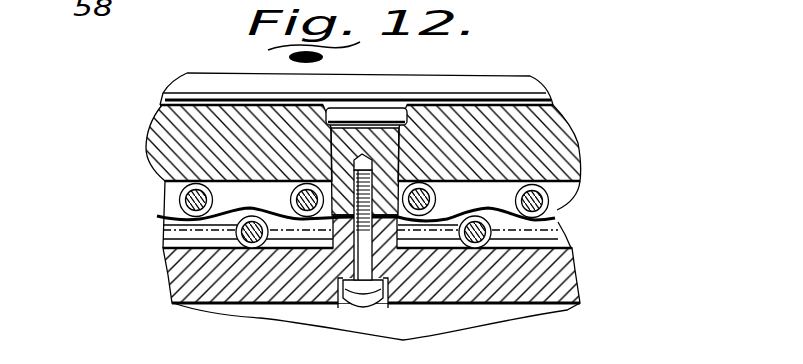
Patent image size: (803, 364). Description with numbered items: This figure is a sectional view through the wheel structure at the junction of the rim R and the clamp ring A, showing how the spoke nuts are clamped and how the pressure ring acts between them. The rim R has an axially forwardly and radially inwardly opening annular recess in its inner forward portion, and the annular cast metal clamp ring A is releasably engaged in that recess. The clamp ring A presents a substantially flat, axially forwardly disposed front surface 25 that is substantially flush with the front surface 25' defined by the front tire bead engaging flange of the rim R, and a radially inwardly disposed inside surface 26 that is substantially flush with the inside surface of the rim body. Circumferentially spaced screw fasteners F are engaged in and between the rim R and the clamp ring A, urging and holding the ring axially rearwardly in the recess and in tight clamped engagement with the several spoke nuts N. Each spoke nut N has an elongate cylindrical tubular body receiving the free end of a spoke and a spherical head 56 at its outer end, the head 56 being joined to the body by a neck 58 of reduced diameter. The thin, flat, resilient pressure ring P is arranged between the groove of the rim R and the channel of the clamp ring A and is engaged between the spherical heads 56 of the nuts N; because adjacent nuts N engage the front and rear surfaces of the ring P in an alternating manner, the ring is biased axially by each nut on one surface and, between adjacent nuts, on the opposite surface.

The neck 58 is at (163, 189).
The spherical head 56 is at (163, 204).
The inside surface 26 is at (349, 120).
The rim R is at (492, 79).
The front surface 25 is at (381, 64).
The front surface 25' is at (432, 68).
The clamp ring A is at (571, 135).
The spoke nut N is at (550, 198).
The pressure ring P is at (555, 218).
The screw fastener F is at (357, 300).